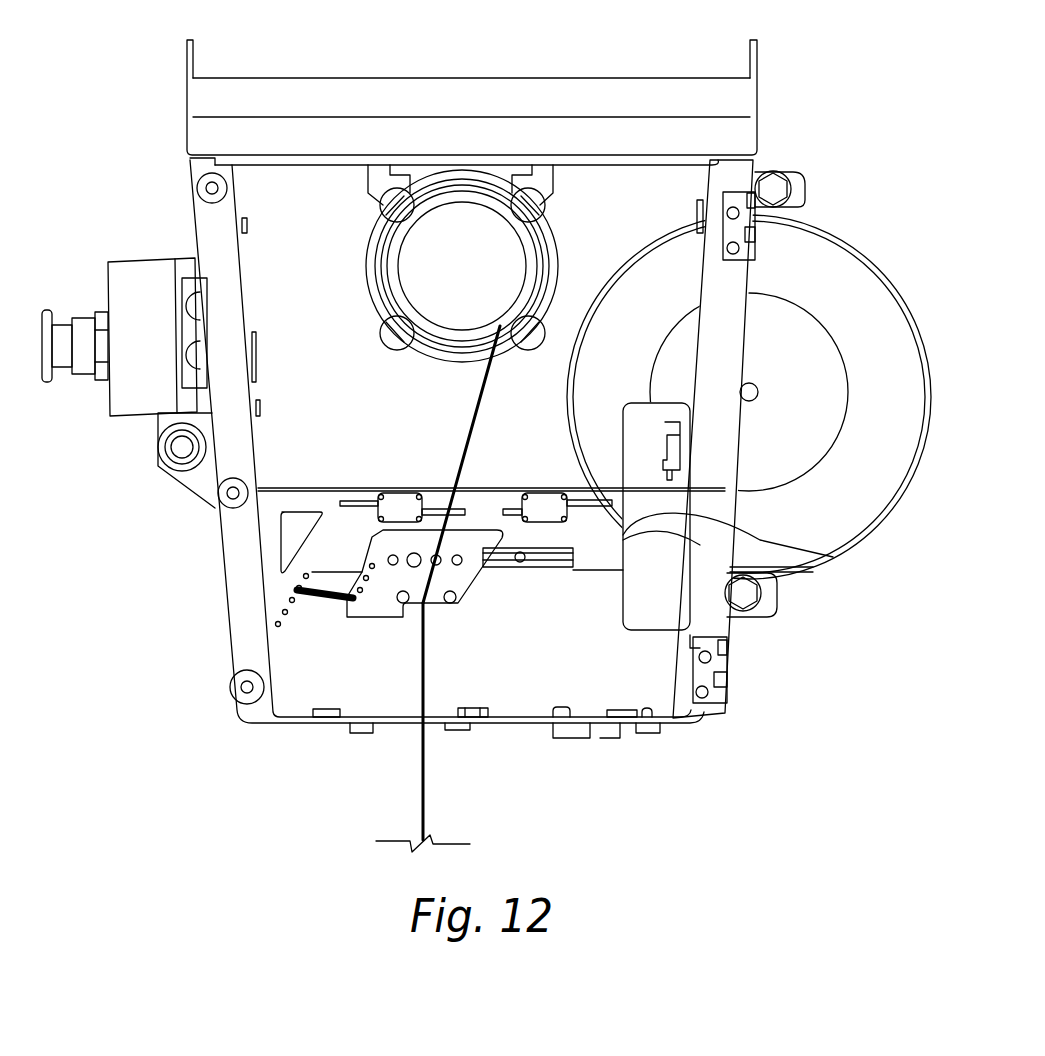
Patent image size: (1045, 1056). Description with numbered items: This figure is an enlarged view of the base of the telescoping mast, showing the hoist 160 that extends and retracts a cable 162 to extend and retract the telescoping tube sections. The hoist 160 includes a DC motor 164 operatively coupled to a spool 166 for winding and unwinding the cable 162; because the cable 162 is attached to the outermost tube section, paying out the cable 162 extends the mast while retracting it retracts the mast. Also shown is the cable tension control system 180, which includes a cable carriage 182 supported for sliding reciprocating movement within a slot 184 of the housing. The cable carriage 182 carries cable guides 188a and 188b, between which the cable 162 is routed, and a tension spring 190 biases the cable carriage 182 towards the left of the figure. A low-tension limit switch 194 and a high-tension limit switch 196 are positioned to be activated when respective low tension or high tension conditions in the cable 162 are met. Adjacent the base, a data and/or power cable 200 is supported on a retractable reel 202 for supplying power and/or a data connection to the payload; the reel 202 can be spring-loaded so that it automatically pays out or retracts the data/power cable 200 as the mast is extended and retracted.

The hoist 160 is at (481, 184).
The cable 162 is at (466, 440).
The DC motor 164 is at (377, 253).
The spool 166 is at (453, 277).
The cable tension control system 180 is at (437, 622).
The cable carriage 182 is at (372, 604).
The slot 184 is at (540, 562).
The cable guide 188a is at (401, 600).
The cable guide 188b is at (455, 602).
The tension spring 190 is at (322, 598).
The low-tension limit switch 194 is at (395, 502).
The high-tension limit switch 196 is at (552, 508).
The data and/or power cable 200 is at (813, 556).
The retractable reel 202 is at (830, 290).